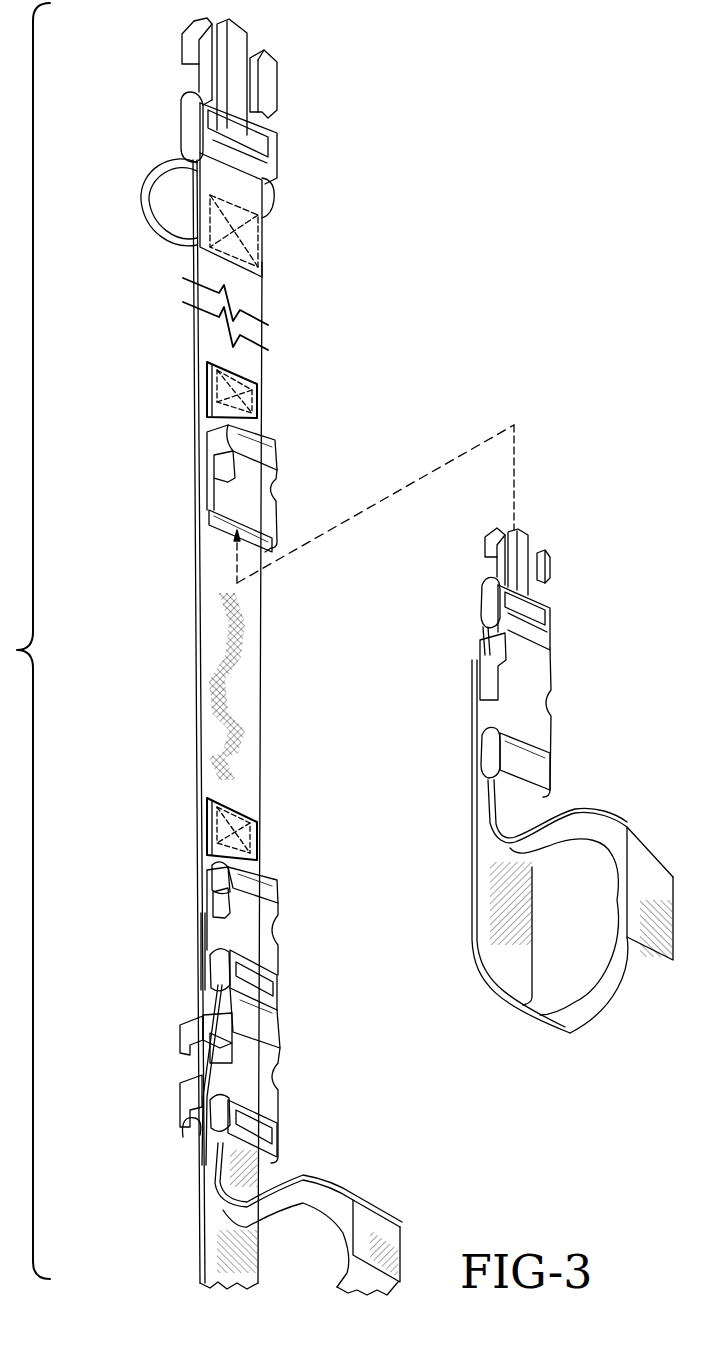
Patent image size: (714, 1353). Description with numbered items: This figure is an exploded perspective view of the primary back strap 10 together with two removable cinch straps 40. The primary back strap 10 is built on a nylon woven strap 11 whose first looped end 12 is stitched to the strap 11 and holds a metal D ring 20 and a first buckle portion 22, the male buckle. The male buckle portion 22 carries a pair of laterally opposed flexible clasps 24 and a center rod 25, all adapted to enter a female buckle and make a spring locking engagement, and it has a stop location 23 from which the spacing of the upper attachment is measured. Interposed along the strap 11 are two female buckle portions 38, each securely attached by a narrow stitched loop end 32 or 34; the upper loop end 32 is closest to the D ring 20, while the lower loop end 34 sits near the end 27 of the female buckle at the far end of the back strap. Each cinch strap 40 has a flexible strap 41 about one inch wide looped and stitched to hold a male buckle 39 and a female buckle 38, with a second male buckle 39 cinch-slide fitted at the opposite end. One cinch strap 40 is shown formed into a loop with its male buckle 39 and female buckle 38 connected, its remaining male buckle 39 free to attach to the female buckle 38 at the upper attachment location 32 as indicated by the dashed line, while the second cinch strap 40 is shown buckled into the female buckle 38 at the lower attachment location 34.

The primary back strap 10 is at (306, 320).
The strap 11 is at (243, 688).
The first looped end 12 is at (255, 182).
The metal D ring 20 is at (168, 240).
The first buckle portion 22 is at (182, 111).
The stop location 23 is at (275, 140).
The flexible clasps 24 is at (265, 70).
The center rod 25 is at (233, 37).
The end of the female buckle 27 is at (190, 1133).
The loop end 32 is at (237, 381).
The loop end 34 is at (235, 816).
The female buckle portion 38 is at (263, 503).
The male buckle portion 39 is at (280, 993).
The cinch strap 40 is at (405, 1222).
The flexible strap 41 is at (490, 923).